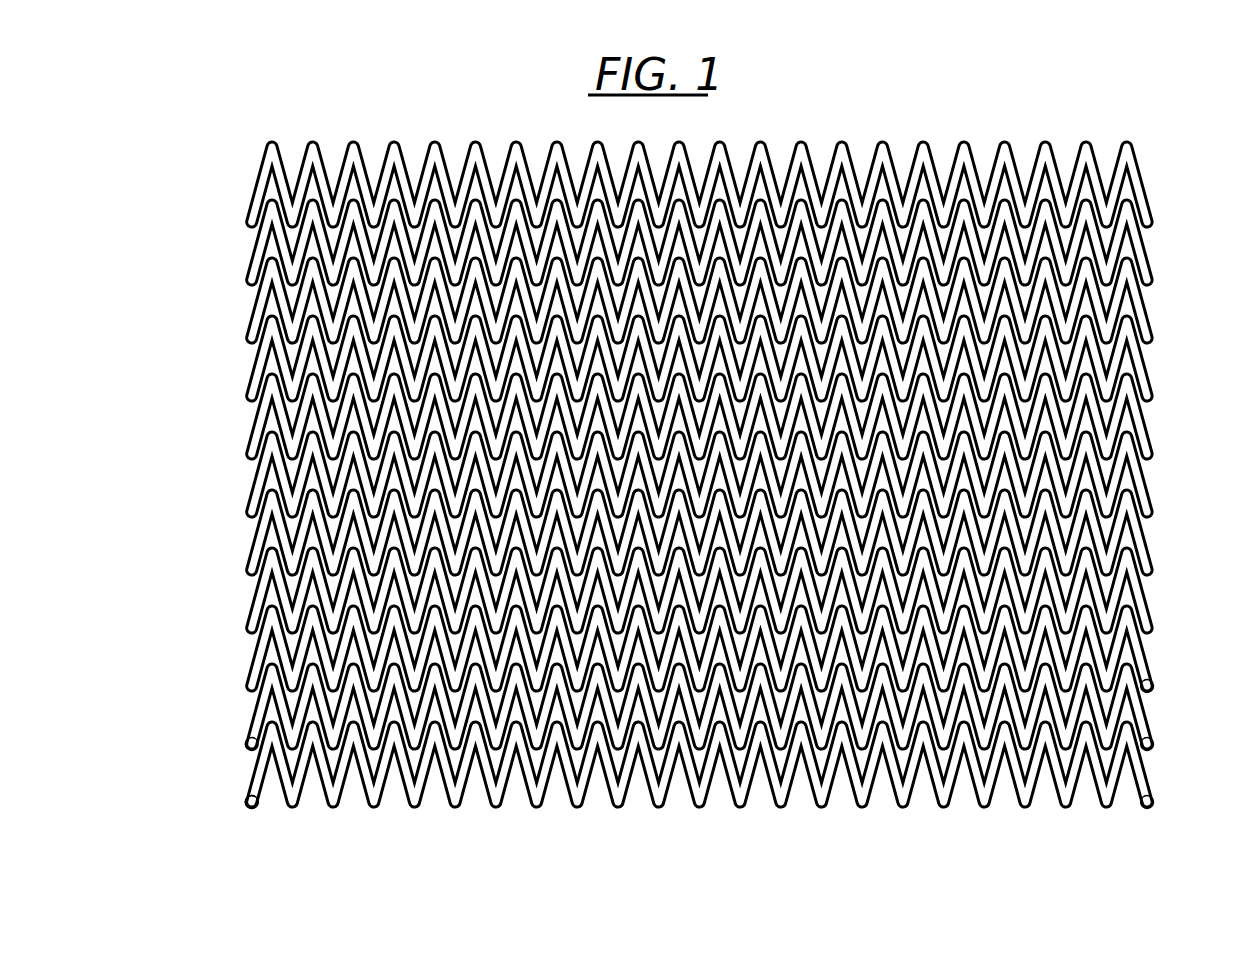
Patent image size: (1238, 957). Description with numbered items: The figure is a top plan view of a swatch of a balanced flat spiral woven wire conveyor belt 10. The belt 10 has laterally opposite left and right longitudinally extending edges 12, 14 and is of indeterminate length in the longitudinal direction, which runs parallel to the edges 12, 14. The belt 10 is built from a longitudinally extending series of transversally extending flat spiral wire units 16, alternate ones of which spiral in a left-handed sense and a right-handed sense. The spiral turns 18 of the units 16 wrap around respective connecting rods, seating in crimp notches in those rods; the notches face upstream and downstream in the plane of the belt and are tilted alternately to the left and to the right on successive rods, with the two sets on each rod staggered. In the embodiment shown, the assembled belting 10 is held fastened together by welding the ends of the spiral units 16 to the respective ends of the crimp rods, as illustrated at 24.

The balanced flat spiral woven wire conveyor belt 10 is at (648, 533).
The left longitudinally extending edge 12 is at (257, 847).
The right longitudinally extending edge 14 is at (1147, 827).
The flat spiral wire unit 16 is at (250, 705).
The spiral turn 18 is at (1137, 717).
The welding of spiral unit ends to crimp rod ends 24 is at (1145, 390).